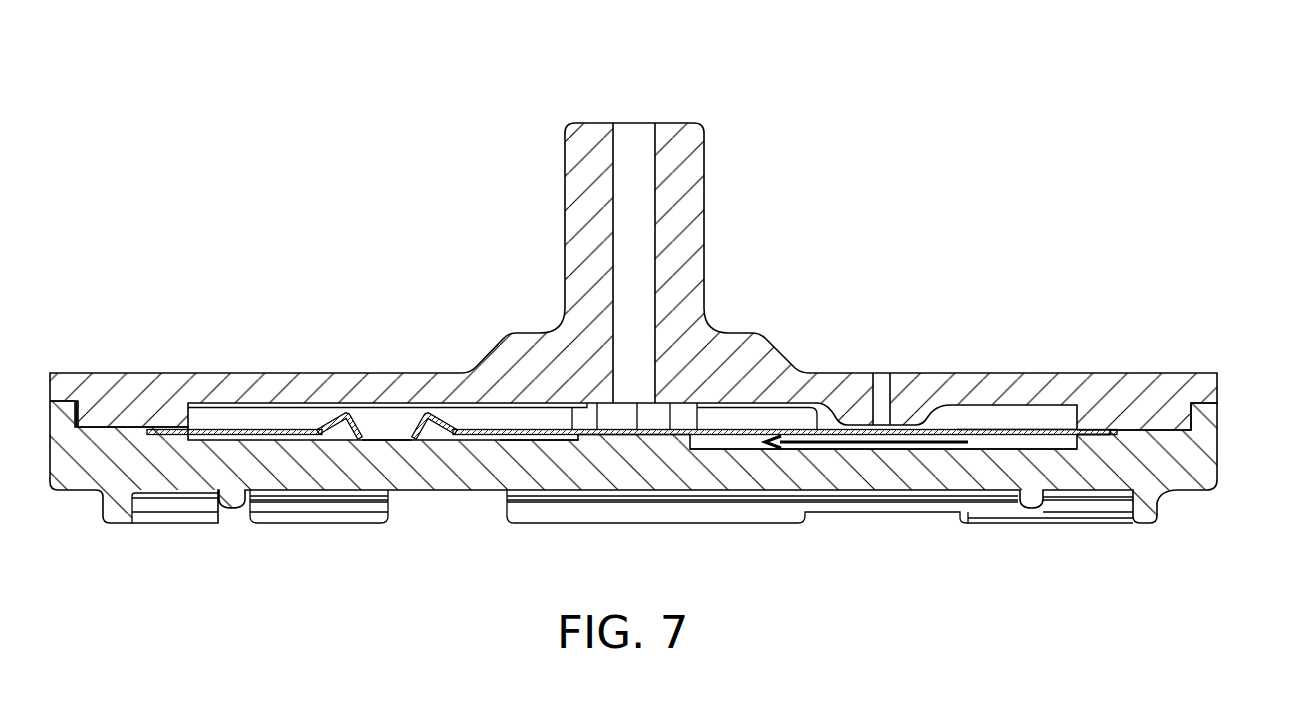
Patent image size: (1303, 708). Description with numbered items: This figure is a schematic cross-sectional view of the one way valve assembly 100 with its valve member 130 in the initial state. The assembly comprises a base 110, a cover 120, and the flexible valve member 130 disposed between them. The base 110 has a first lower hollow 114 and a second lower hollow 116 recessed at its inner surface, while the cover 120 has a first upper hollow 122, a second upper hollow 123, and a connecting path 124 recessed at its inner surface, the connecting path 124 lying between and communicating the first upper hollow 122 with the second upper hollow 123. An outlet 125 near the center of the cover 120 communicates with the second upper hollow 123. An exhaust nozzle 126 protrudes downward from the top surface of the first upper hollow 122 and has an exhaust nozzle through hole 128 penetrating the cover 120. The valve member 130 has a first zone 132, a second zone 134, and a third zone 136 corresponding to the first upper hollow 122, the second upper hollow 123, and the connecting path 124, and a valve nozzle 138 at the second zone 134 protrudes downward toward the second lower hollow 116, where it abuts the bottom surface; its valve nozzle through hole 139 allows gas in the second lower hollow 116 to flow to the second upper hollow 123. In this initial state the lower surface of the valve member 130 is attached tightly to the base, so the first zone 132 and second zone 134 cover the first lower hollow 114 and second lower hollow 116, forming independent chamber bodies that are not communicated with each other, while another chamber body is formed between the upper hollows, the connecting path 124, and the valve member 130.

The one way valve assembly 100 is at (664, 295).
The base 110 is at (1202, 449).
The first lower hollow 114 is at (1057, 456).
The second lower hollow 116 is at (549, 452).
The cover 120 is at (1202, 388).
The first upper hollow 122 is at (1052, 413).
The second upper hollow 123 is at (247, 404).
The connecting path 124 is at (621, 407).
The outlet 125 is at (636, 141).
The exhaust nozzle 126 is at (937, 408).
The exhaust nozzle through hole 128 is at (886, 386).
The valve member 130 is at (660, 258).
The first zone 132 is at (987, 427).
The second zone 134 is at (483, 427).
The third zone 136 is at (640, 410).
The valve nozzle 138 is at (424, 426).
The valve nozzle through hole 139 is at (393, 417).